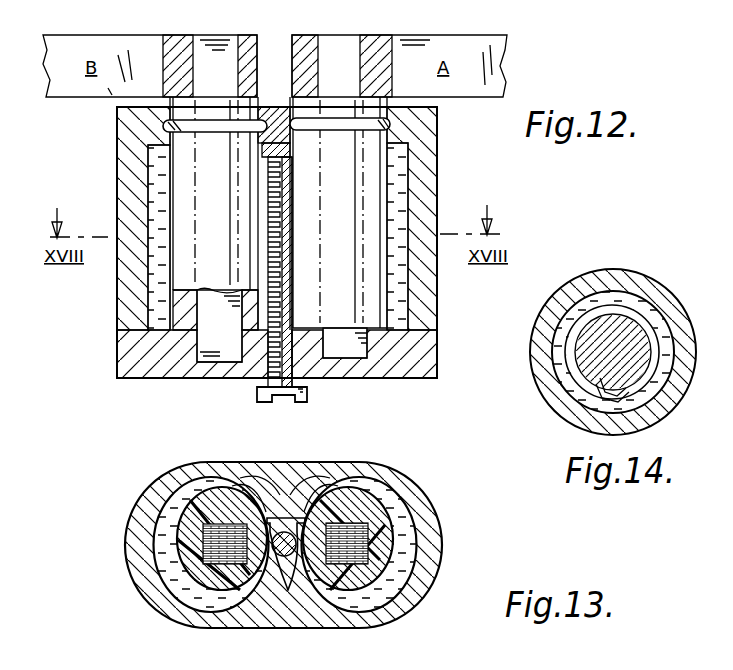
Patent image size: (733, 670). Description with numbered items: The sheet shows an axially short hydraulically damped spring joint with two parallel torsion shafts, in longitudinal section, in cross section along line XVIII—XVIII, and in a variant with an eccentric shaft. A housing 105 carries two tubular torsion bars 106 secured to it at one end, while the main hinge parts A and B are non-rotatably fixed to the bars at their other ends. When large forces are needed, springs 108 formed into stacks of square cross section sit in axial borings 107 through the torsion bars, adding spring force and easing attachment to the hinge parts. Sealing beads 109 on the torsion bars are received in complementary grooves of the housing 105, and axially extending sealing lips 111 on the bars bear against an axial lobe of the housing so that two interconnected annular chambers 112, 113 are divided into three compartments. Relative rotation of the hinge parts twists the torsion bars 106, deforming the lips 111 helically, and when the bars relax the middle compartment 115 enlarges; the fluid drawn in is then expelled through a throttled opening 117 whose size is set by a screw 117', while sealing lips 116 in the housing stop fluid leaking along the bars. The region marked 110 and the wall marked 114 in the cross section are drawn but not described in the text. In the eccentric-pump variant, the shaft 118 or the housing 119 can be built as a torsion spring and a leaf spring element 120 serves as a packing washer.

In FIG. 12, the housing 105 is at (437, 118).
In FIG. 13, the housing 105 is at (432, 515).
In FIG. 12, the tubular torsion bars 106 is at (180, 164).
In FIG. 13, the tubular torsion bars 106 is at (207, 575).
In FIG. 12, the axial borings 107 is at (206, 300).
In FIG. 13, the axial borings 107 is at (220, 567).
In FIG. 12, the springs 108 is at (212, 350).
In FIG. 13, the springs 108 is at (348, 565).
In FIG. 12, the sealing beads 109 is at (137, 100).
In FIG. 12, the centre web 110 is at (165, 127).
In FIG. 13, the centre web 110 is at (285, 508).
In FIG. 13, the sealing lips 111 is at (233, 490).
In FIG. 13, the annular chamber 112 is at (163, 547).
In FIG. 13, the annular chamber 113 is at (412, 547).
In FIG. 13, the housing wall 114 is at (170, 508).
In FIG. 13, the middle compartment 115 is at (236, 497).
In FIG. 13, the sealing lips 116 is at (298, 567).
In FIG. 12, the throttled opening 117 is at (280, 230).
In FIG. 12, the screw 117' is at (308, 398).
In FIG. 14, the shaft 118 is at (640, 373).
In FIG. 14, the housing 119 is at (672, 306).
In FIG. 14, the leaf spring element 120 is at (558, 367).